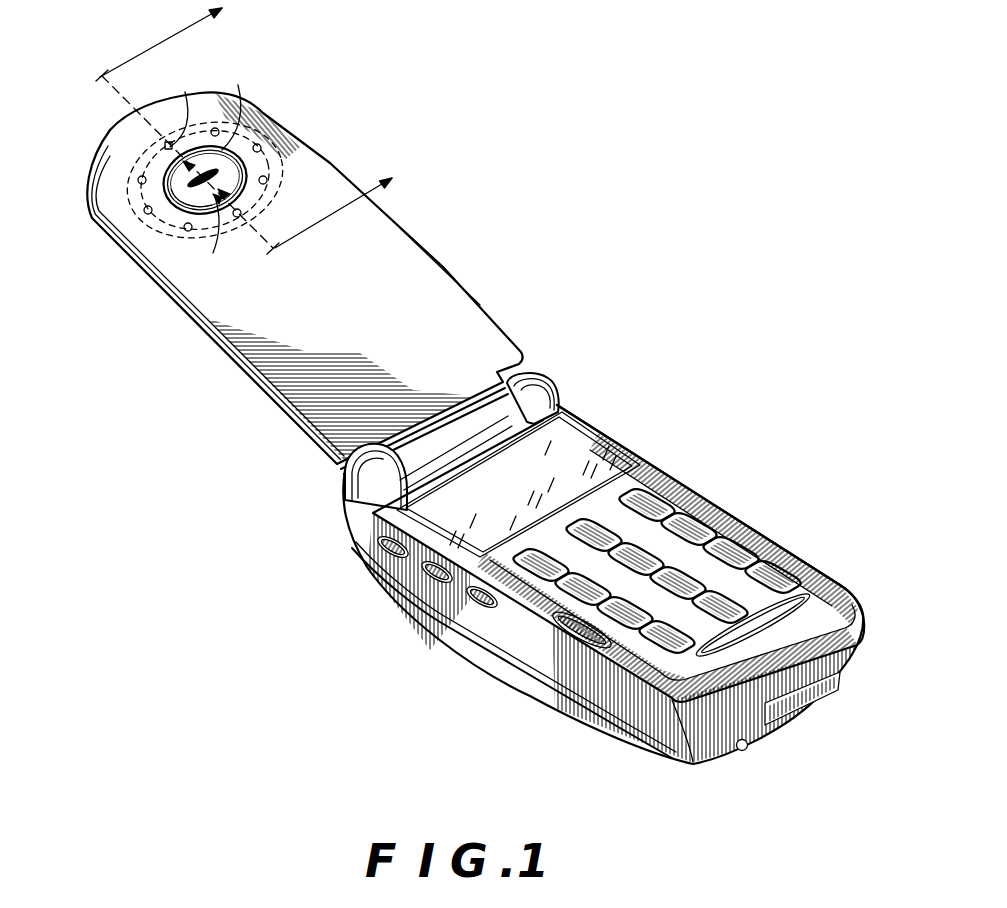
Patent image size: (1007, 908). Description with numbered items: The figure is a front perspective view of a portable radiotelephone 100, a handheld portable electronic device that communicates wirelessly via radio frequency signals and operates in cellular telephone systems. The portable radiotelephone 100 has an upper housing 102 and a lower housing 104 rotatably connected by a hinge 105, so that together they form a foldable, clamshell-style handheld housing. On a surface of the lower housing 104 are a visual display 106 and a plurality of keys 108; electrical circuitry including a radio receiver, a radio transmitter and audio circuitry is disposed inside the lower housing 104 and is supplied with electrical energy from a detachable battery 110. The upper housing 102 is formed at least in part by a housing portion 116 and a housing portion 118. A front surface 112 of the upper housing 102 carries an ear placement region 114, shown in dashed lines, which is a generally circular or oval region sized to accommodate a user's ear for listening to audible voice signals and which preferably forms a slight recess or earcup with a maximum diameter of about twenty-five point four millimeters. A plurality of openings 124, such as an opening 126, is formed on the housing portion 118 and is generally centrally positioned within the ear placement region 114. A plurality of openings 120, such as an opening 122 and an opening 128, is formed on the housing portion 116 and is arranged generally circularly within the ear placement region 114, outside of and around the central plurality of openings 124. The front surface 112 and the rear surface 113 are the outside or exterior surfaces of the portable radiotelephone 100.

The portable radiotelephone 100 is at (603, 312).
The upper housing 102 is at (346, 118).
The lower housing 104 is at (828, 558).
The hinge 105 is at (323, 487).
The visual display 106 is at (587, 452).
The plurality of keys 108 is at (682, 562).
The detachable battery 110 is at (531, 683).
The front surface 112 is at (104, 152).
The rear surface 113 is at (103, 222).
The ear placement region 114 is at (257, 130).
The housing portion 116 is at (440, 270).
The housing portion 118 is at (240, 102).
The plurality of openings 120 is at (148, 143).
The opening 122 is at (185, 105).
The plurality of openings 124 is at (228, 175).
The opening 126 is at (210, 235).
The opening 128 is at (238, 213).